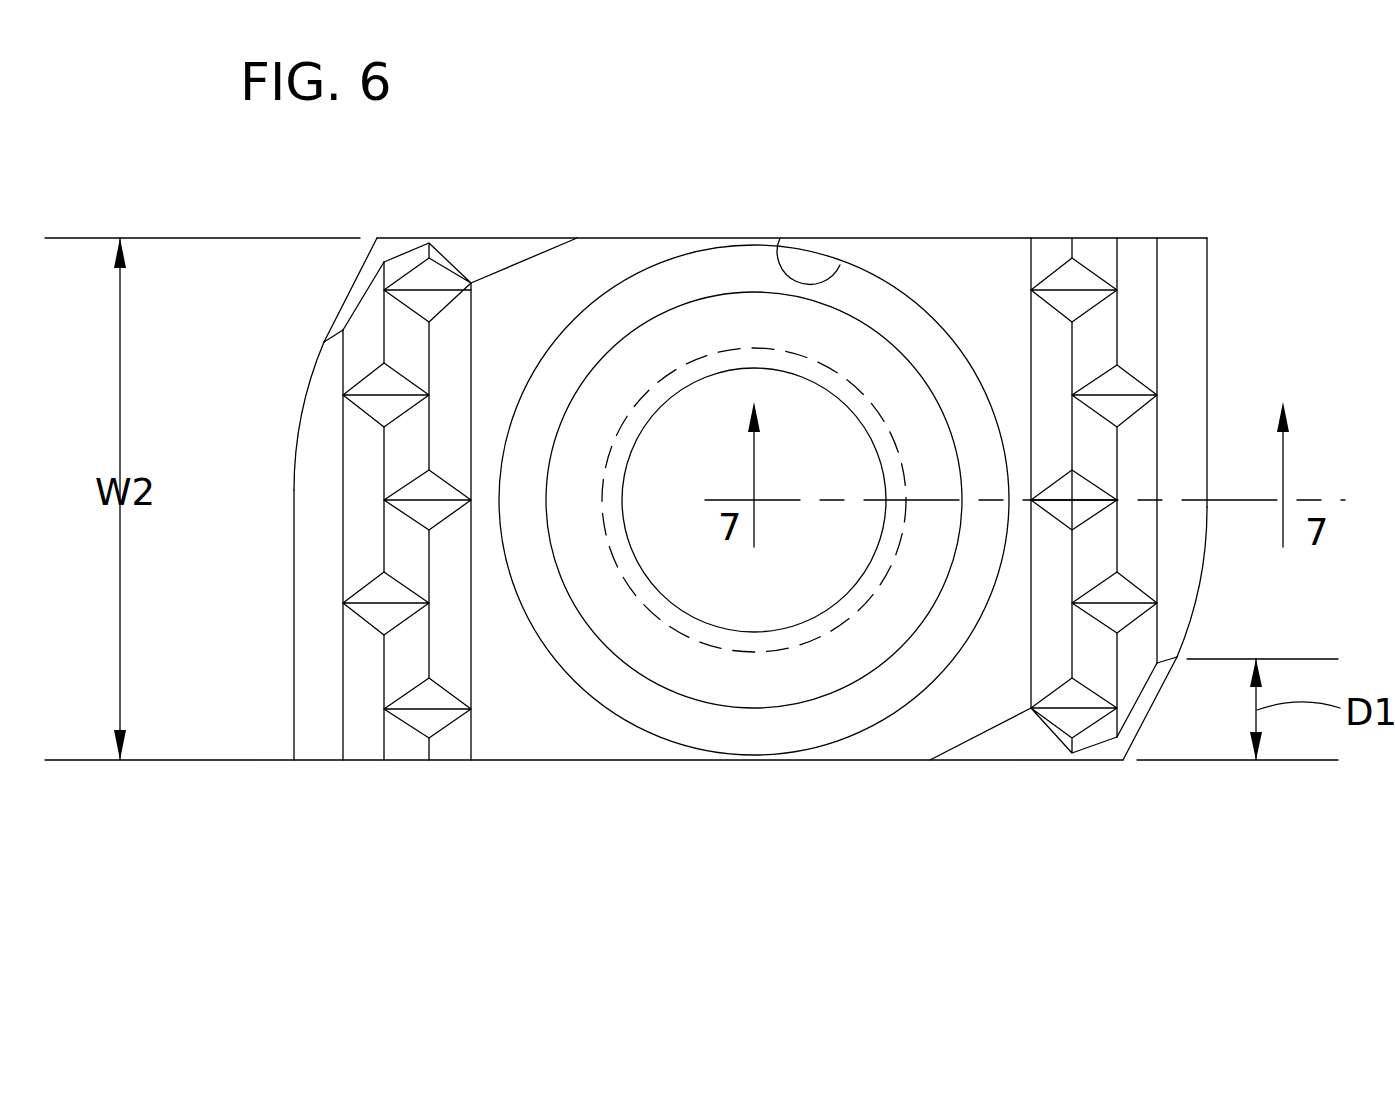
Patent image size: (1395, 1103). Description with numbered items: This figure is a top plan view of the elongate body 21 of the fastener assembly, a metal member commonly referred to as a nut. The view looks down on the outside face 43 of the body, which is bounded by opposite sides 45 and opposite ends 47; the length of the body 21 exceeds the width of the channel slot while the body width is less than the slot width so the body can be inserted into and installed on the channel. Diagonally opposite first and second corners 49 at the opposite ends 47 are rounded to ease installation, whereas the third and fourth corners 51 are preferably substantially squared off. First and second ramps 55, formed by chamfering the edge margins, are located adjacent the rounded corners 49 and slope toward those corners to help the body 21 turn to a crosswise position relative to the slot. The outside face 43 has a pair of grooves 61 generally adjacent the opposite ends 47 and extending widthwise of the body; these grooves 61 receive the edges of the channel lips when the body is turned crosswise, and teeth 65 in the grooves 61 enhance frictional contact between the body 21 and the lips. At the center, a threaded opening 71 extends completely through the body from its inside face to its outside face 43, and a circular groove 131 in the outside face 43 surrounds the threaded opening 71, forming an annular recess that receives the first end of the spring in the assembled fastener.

The elongate body 21 is at (1156, 200).
The outside face 43 is at (875, 740).
The opposite sides 45 is at (645, 238).
The opposite ends 47 is at (1207, 320).
The first and second corners 49 is at (340, 300).
The third and fourth corners 51 is at (1207, 238).
The first and second ramps 55 is at (380, 252).
The grooves 61 is at (467, 333).
The teeth 65 is at (1070, 278).
The central threaded opening 71 is at (700, 622).
The circular groove 131 is at (780, 237).